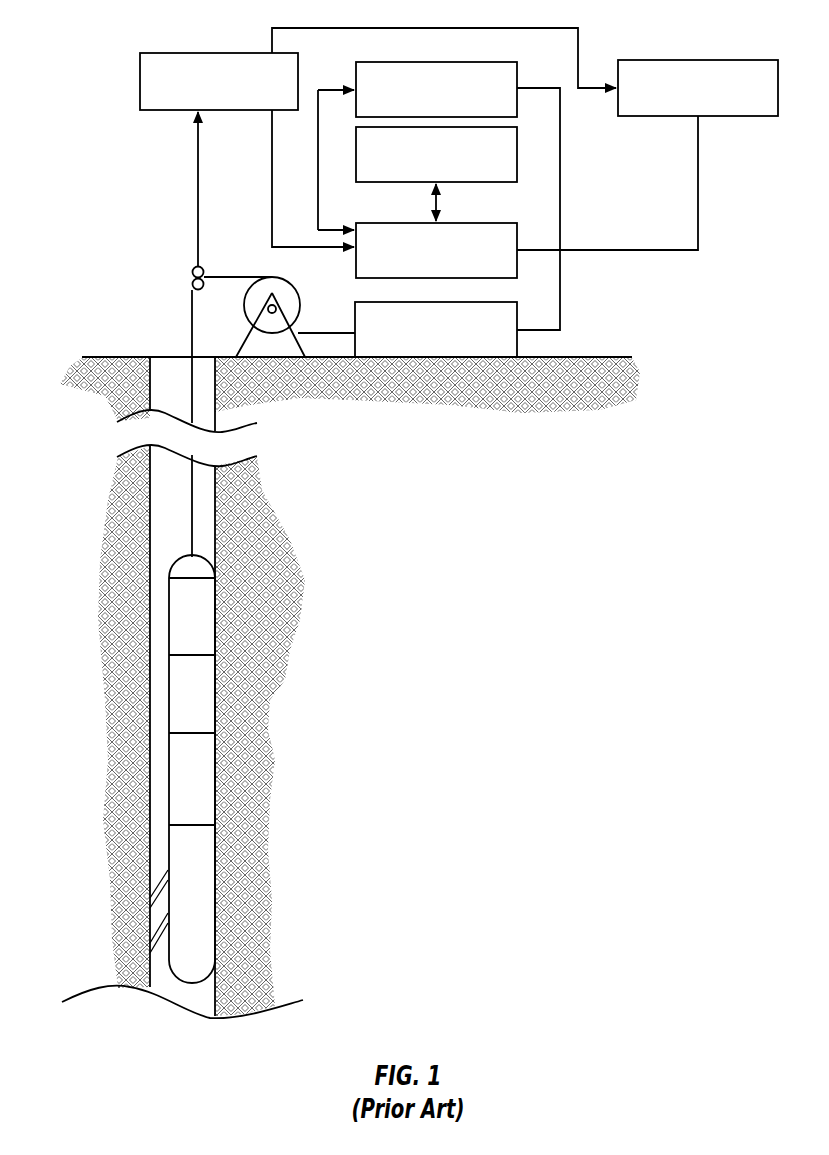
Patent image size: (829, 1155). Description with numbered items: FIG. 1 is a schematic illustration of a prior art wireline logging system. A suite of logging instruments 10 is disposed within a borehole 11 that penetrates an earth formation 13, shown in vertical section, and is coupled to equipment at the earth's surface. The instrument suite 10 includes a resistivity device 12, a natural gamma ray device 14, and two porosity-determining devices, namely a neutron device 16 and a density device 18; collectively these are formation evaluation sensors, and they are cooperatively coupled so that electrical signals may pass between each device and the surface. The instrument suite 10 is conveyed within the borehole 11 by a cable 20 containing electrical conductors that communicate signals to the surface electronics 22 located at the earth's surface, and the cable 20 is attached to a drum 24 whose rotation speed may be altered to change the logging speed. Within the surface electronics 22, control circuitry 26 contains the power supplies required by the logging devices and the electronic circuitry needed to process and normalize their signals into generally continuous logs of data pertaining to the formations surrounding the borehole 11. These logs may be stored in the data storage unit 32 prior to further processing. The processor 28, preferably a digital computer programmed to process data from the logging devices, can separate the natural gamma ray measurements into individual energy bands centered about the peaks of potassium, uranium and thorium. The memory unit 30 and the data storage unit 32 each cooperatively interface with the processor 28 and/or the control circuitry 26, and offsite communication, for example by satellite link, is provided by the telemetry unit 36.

The logging instrument suite 10 is at (218, 769).
The borehole 11 is at (215, 496).
The resistivity device 12 is at (207, 607).
The earth formation 13 is at (205, 545).
The natural gamma ray device 14 is at (207, 677).
The neutron device 16 is at (207, 762).
The density device 18 is at (207, 852).
The cable 20 is at (192, 407).
The surface electronics 22 is at (96, 67).
The drum 24 is at (160, 53).
The control circuitry 26 is at (517, 350).
The processor 28 is at (517, 230).
The memory unit 30 is at (517, 162).
The data storage unit 32 is at (478, 62).
The telemetry unit 36 is at (728, 116).